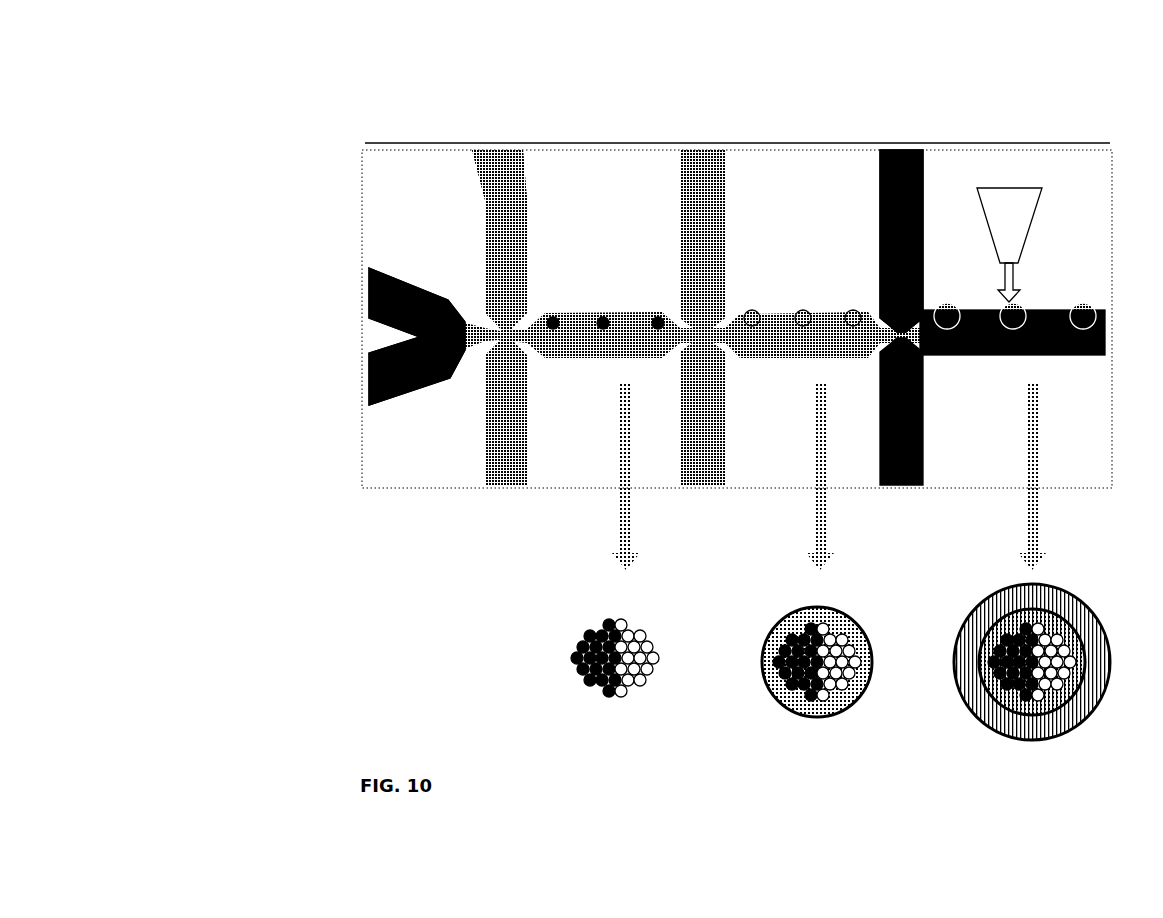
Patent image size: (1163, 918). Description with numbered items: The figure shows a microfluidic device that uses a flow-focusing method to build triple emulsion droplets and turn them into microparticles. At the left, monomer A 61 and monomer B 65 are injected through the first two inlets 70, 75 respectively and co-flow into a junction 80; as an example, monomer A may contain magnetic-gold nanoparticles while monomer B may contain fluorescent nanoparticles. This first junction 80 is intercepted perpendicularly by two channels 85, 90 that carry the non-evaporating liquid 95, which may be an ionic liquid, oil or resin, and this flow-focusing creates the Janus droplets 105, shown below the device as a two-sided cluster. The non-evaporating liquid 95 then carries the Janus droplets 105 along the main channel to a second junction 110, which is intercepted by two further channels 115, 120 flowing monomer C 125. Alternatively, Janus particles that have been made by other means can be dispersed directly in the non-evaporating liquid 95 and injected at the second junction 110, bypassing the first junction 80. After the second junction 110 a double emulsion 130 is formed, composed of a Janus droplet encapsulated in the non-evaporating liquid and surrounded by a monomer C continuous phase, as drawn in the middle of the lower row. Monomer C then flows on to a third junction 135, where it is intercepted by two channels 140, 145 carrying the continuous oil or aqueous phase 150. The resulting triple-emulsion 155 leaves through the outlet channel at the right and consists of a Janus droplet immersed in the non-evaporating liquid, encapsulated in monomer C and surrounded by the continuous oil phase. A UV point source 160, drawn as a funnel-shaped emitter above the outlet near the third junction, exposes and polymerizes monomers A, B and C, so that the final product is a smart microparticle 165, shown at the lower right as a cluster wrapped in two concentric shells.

The monomer A 61 is at (410, 283).
The monomer B 65 is at (410, 393).
The first inlet 70 is at (355, 283).
The second inlet 75 is at (364, 389).
The junction 80 is at (490, 342).
The channel 85 is at (497, 170).
The channel 90 is at (514, 450).
The non-evaporating liquid 95 is at (515, 226).
The Janus droplets 105 is at (619, 705).
The second junction 110 is at (712, 336).
The channel 115 is at (701, 170).
The channel 120 is at (702, 478).
The monomer C 125 is at (710, 208).
The double emulsion 130 is at (826, 728).
The third junction 135 is at (918, 300).
The channel 140 is at (903, 170).
The channel 145 is at (903, 478).
The continuous oil phase 150 is at (920, 168).
The triple-emulsion 155 is at (1085, 352).
The UV point source 160 is at (1012, 197).
The smart microparticle 165 is at (1041, 748).